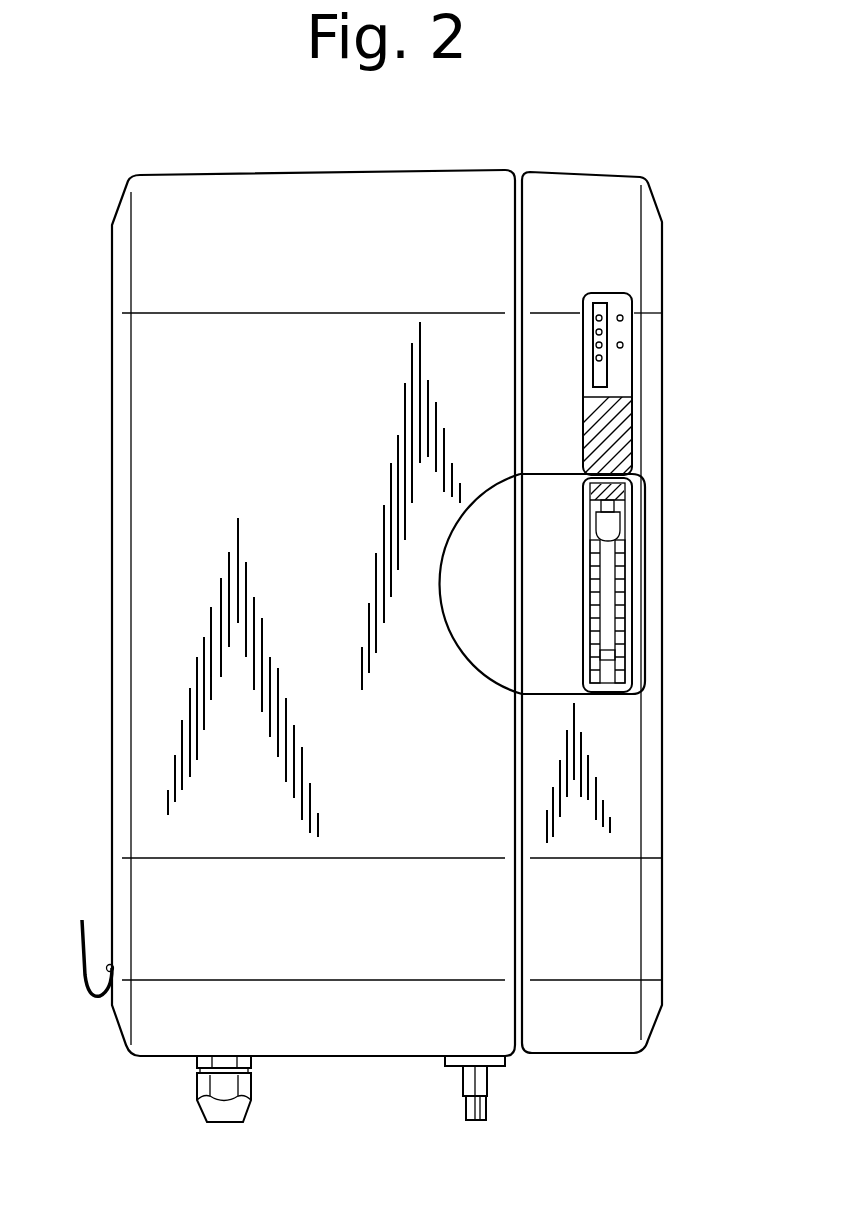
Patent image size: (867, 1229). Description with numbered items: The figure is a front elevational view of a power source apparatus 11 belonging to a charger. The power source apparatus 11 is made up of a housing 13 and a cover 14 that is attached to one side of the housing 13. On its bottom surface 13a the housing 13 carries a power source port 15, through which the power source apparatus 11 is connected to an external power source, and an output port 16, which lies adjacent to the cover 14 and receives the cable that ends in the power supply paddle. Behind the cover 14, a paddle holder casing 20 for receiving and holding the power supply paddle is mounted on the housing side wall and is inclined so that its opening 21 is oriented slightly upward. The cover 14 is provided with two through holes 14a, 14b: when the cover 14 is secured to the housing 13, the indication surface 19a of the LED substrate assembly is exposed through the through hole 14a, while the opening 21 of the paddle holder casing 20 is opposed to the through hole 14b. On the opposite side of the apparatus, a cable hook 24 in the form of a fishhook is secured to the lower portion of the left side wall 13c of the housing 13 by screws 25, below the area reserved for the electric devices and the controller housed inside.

The power source apparatus 11 is at (618, 156).
The housing 13 is at (348, 190).
The bottom surface 13a is at (368, 1058).
The side wall 13c is at (112, 497).
The cover 14 is at (627, 208).
The through hole 14a is at (630, 300).
The through hole 14b is at (625, 505).
The power source port 15 is at (213, 1105).
The output port 16 is at (480, 1078).
The indication surface 19a is at (625, 368).
The paddle holder casing 20 is at (622, 617).
The opening 21 is at (604, 657).
The cable hook 24 is at (82, 950).
The screws 25 is at (110, 968).